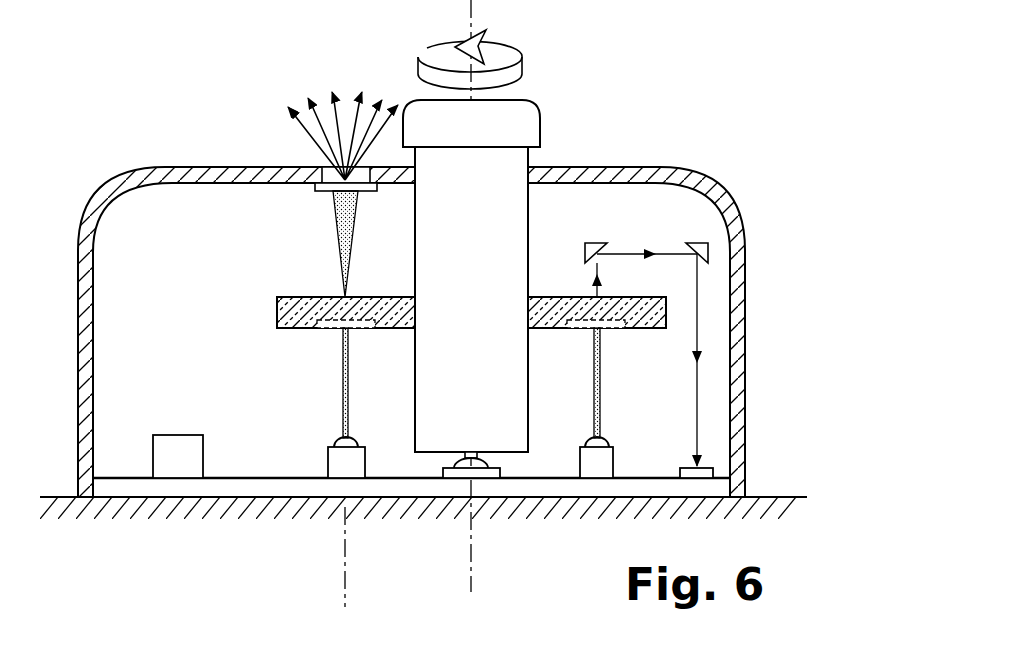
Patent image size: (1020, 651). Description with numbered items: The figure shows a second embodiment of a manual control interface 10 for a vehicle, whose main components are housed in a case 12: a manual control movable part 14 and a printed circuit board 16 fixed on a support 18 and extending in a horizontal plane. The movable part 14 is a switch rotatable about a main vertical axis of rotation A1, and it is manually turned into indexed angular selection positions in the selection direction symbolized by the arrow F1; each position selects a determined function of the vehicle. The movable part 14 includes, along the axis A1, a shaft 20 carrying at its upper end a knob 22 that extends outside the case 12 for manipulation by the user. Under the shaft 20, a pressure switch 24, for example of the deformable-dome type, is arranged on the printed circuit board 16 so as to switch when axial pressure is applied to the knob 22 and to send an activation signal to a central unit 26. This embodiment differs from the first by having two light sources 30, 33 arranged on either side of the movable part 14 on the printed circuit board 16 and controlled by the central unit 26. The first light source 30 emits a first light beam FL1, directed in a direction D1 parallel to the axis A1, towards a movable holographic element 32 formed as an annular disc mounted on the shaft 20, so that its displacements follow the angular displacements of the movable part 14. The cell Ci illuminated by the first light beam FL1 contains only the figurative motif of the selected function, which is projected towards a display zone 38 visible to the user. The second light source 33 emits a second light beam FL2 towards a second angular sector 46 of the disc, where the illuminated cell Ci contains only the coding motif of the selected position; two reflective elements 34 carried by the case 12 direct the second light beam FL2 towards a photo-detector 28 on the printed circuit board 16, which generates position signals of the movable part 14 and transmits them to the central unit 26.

The manual control interface 10 is at (668, 81).
The case 12 is at (667, 163).
The manual control movable part 14 is at (577, 138).
The printed circuit board 16 is at (647, 469).
The support 18 is at (779, 494).
The shaft 20 is at (528, 210).
The knob 22 is at (541, 118).
The pressure switch 24 is at (438, 475).
The central unit 26 is at (170, 432).
The photo-detector 28 is at (712, 463).
The light source 30 is at (322, 436).
The movable holographic element 32 is at (295, 292).
The second light source 33 is at (574, 461).
The reflective element 34 is at (593, 243).
The display zone 38 is at (321, 160).
The second angular sector 46 is at (672, 313).
The selection direction arrow F1 is at (470, 53).
The first light beam FL1 is at (338, 380).
The second light beam FL2 is at (604, 352).
The cell Ci is at (324, 334).
The direction of the light beam D1 is at (345, 557).
The main vertical axis of rotation A1 is at (471, 563).